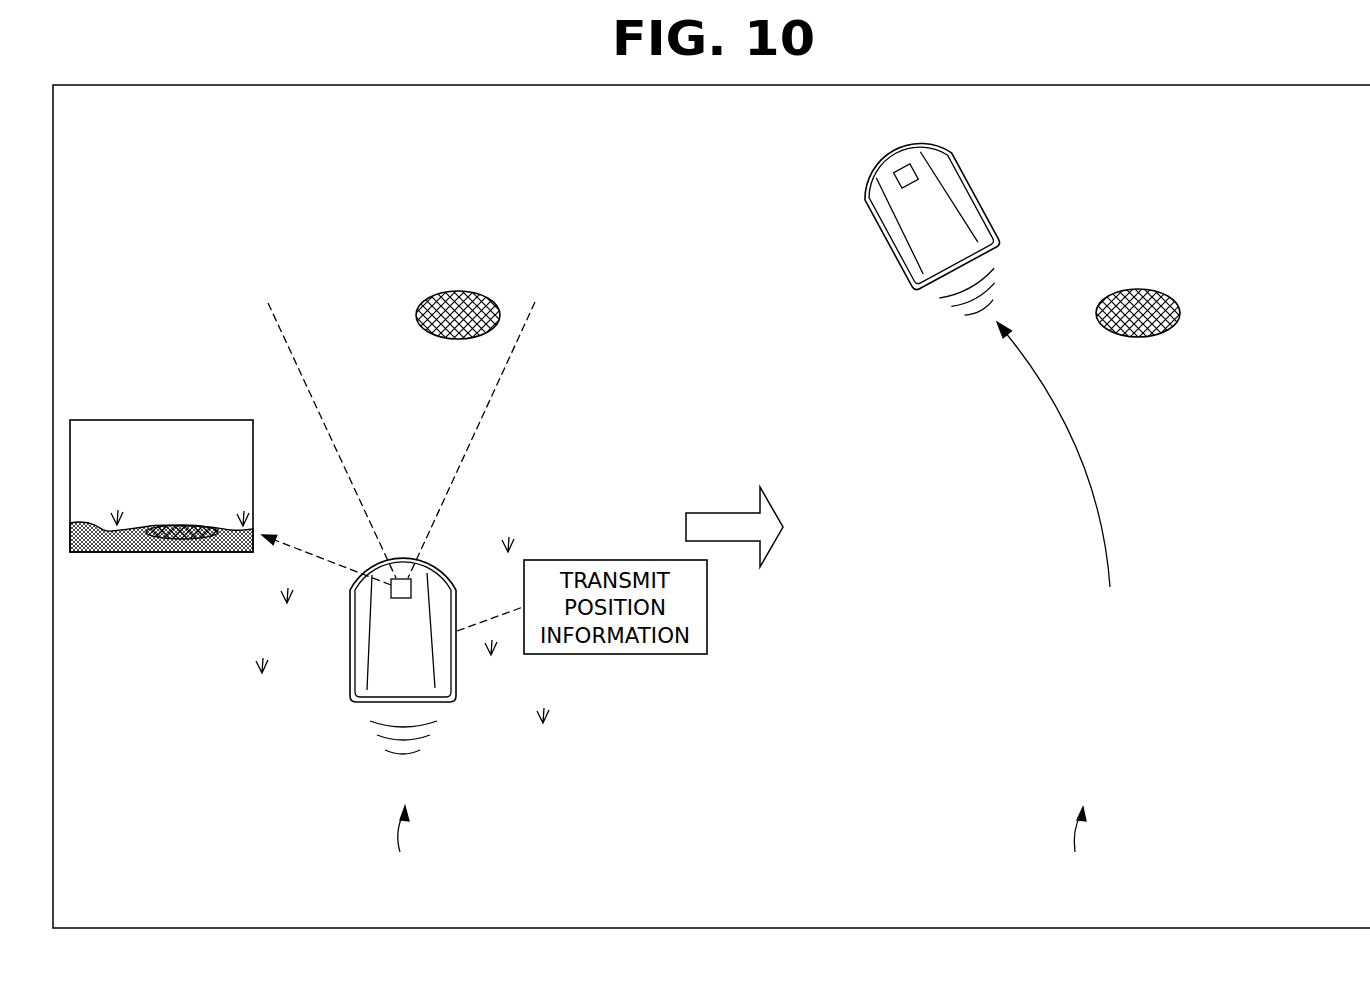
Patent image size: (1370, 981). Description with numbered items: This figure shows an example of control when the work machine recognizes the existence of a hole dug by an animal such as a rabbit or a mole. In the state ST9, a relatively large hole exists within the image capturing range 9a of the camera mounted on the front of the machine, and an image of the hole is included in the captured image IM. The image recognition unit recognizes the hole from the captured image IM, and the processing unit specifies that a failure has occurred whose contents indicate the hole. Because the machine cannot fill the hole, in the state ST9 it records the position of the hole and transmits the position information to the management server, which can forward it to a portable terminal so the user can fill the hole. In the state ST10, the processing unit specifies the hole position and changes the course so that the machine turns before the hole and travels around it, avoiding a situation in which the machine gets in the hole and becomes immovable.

The image capturing range 9a is at (485, 415).
The captured image IM is at (161, 458).
The state ST9 is at (397, 847).
The state ST10 is at (1082, 848).